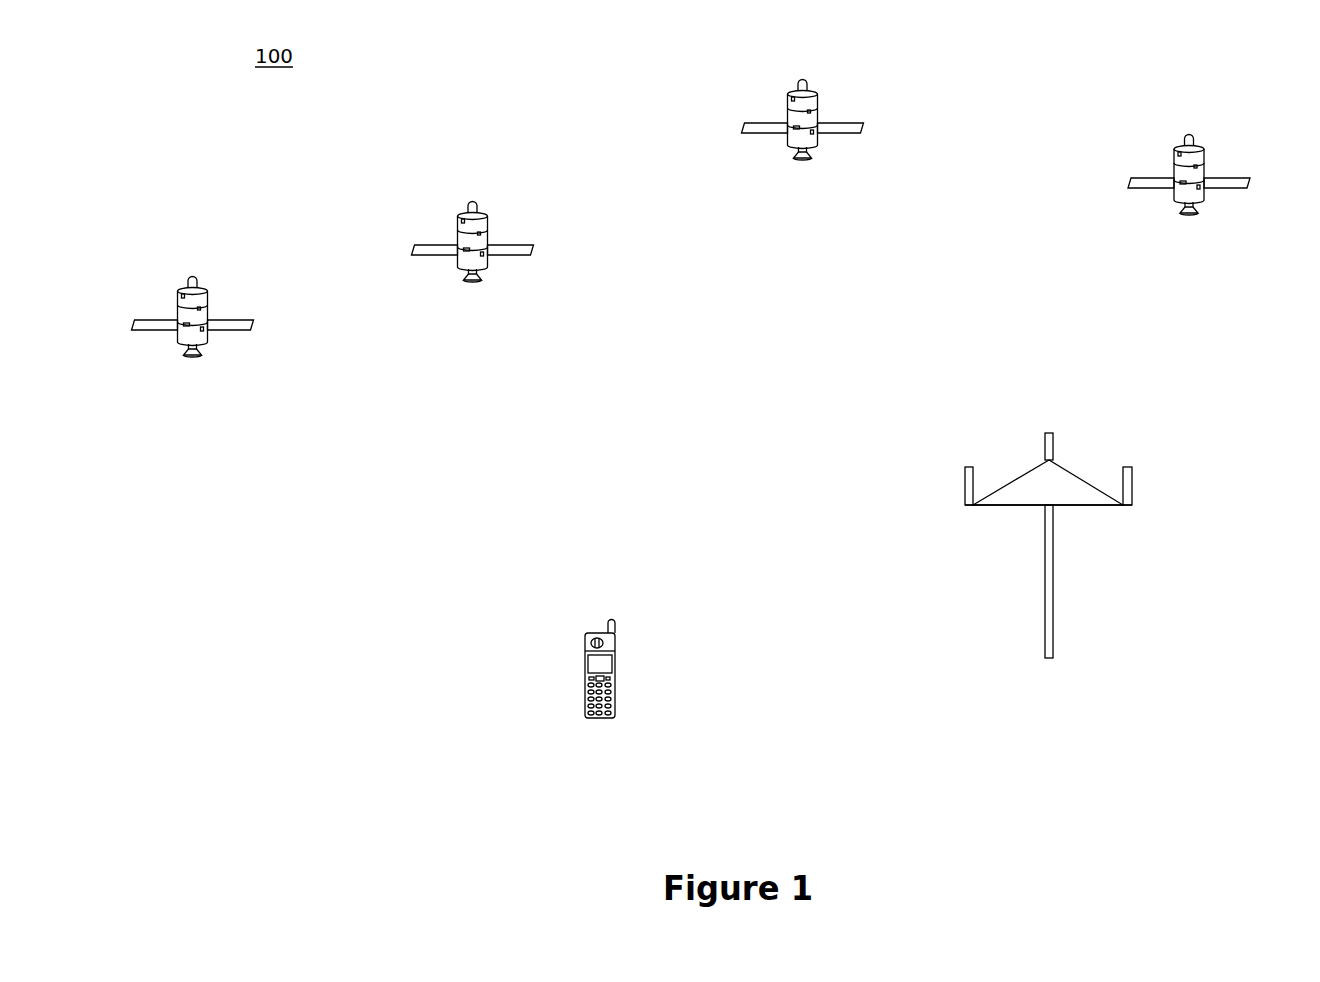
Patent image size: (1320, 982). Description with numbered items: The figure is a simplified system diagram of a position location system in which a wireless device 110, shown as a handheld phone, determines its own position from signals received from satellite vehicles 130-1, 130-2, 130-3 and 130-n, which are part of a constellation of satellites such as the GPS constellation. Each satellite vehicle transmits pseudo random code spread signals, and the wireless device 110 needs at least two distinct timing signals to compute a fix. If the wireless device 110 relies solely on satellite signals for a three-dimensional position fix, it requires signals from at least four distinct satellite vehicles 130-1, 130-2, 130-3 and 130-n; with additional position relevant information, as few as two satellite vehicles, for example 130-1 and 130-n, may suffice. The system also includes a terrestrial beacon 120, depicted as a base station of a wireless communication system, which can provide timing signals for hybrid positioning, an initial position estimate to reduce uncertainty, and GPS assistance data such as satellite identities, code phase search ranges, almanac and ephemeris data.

The wireless device 110 is at (572, 665).
The terrestrial beacon 120 is at (1090, 620).
The satellite vehicle 130-1 is at (198, 272).
The satellite vehicle 130-2 is at (478, 195).
The satellite vehicle 130-3 is at (810, 73).
The satellite vehicle 130-n is at (1197, 128).